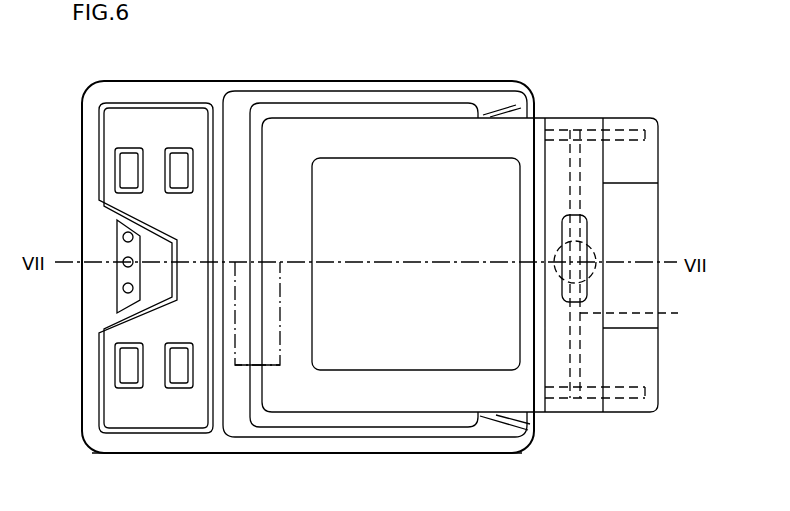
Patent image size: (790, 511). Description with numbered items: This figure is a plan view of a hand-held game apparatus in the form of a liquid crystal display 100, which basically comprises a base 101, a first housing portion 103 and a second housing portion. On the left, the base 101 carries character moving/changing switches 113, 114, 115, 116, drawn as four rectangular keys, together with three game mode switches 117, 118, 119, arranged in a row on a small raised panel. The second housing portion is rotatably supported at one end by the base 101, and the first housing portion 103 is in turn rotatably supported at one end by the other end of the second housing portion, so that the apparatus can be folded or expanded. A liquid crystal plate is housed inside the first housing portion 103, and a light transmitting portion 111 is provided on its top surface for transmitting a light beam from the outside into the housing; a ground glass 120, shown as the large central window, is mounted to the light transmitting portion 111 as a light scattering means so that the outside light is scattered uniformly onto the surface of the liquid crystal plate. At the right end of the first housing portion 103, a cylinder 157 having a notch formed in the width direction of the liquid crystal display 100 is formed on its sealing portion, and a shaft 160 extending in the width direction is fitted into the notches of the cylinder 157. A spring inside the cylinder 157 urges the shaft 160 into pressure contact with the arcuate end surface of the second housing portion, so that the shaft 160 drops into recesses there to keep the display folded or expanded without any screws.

The liquid crystal display 100 is at (318, 66).
The base 101 is at (449, 454).
The first housing portion 103 is at (527, 400).
The light transmitting portion 111 is at (494, 156).
The character moving/changing switch 113 is at (166, 157).
The character moving/changing switch 114 is at (120, 172).
The character moving/changing switch 115 is at (180, 375).
The character moving/changing switch 116 is at (125, 365).
The game mode switch 117 is at (123, 236).
The game mode switch 118 is at (122, 262).
The game mode switch 119 is at (122, 289).
The ground glass 120 is at (383, 167).
The cylinder 157 is at (597, 250).
The shaft 160 is at (646, 314).